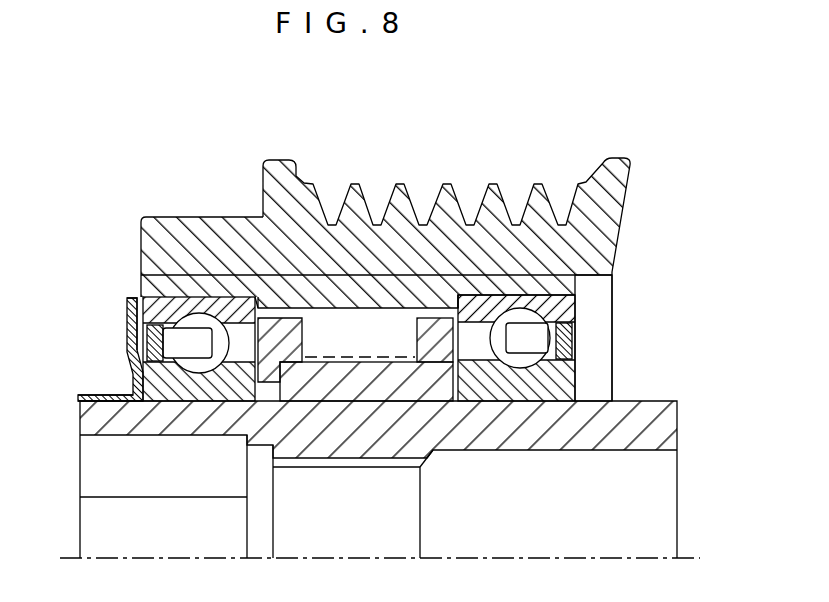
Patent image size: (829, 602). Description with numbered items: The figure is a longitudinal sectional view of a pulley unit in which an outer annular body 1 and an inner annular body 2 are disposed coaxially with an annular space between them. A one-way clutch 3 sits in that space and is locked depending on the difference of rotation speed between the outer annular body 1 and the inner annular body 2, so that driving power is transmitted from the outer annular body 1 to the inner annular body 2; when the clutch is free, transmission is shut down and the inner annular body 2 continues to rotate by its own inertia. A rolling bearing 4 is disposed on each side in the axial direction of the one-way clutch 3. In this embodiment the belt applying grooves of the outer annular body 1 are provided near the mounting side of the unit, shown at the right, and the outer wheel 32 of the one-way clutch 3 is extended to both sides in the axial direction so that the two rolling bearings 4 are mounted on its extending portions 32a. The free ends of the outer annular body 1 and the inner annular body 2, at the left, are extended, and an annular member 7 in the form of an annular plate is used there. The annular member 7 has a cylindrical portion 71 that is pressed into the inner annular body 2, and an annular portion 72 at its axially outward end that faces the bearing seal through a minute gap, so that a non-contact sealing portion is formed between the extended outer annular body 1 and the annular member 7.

The outer annular body 1 is at (143, 248).
The inner annular body 2 is at (83, 422).
The one-way clutch 3 is at (411, 266).
The rolling bearing 4 is at (198, 287).
The annular member 7 is at (78, 340).
The cylindrical portion 71 is at (78, 398).
The annular portion 72 is at (127, 307).
The outer wheel 32 is at (368, 292).
The extending portions 32a is at (243, 285).